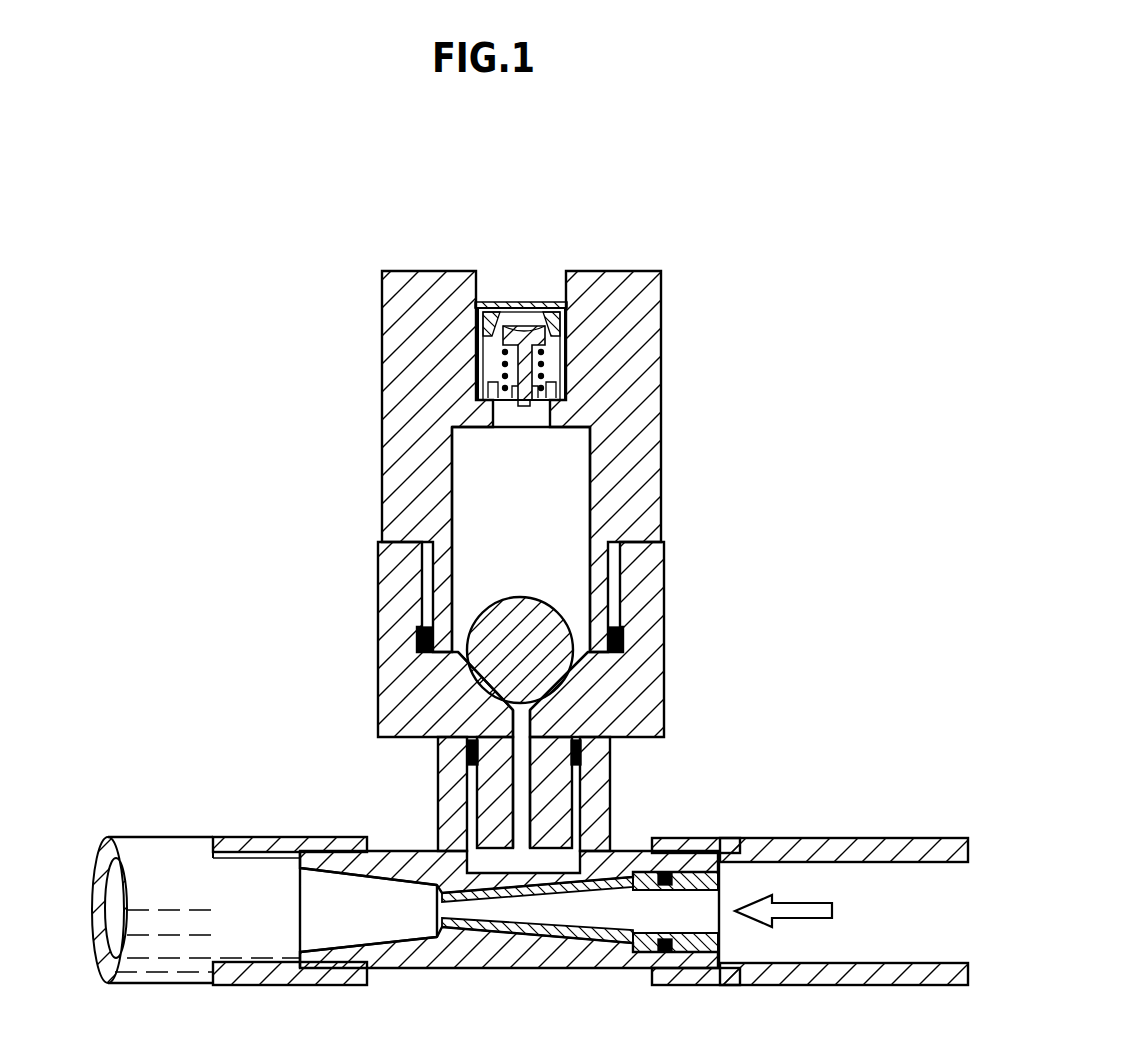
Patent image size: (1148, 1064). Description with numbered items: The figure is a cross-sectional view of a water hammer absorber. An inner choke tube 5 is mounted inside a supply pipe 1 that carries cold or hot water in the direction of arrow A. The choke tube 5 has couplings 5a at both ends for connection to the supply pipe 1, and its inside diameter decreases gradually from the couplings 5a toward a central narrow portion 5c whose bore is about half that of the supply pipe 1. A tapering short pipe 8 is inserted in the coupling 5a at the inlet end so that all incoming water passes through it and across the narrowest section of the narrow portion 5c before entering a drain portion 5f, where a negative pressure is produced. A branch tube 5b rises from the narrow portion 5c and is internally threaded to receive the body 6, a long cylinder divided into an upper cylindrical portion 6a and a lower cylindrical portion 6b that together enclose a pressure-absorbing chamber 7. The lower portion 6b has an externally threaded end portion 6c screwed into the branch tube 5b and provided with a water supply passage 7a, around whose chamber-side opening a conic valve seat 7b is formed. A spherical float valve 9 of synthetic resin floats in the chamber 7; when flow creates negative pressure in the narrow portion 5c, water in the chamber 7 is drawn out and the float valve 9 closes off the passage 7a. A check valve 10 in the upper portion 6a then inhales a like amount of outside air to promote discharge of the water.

The supply pipe 1 is at (232, 985).
The inner choke tube 5 is at (476, 894).
The couplings 5a is at (381, 968).
The branch tube 5b is at (610, 775).
The narrow portion 5c is at (492, 927).
The drain portion 5f is at (366, 921).
The body 6 is at (508, 568).
The upper cylindrical portion 6a is at (661, 472).
The lower cylindrical portion 6b is at (664, 642).
The externally threaded end portion 6c is at (545, 858).
The pressure-absorbing chamber 7 is at (450, 637).
The water supply passage 7a is at (515, 790).
The conic valve seat 7b is at (580, 642).
The tapering short pipe 8 is at (720, 880).
The spherical float valve 9 is at (520, 596).
The check valve 10 is at (521, 327).
The arrow indicating flow direction A is at (783, 895).